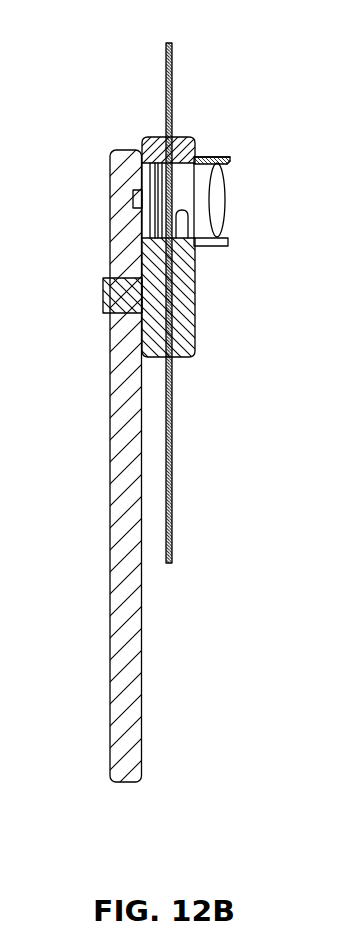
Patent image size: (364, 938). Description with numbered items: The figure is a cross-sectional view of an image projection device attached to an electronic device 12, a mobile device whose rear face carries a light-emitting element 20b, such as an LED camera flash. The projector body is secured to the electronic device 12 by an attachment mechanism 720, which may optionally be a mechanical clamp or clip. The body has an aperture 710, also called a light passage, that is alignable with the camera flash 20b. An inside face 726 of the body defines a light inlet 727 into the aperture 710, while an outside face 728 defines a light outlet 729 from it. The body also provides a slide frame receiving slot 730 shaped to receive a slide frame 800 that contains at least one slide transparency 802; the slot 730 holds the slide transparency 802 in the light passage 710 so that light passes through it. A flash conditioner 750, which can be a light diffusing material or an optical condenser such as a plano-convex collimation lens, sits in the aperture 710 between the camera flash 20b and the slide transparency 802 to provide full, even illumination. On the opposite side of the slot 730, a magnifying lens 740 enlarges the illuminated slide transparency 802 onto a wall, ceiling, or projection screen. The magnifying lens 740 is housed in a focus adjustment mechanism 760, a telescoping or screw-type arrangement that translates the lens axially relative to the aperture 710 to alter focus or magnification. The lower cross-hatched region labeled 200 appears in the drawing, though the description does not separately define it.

The electronic device 12 is at (106, 562).
The light-emitting element 20b is at (125, 200).
The mounting assembly body 200 is at (201, 340).
The aperture 710 is at (189, 181).
The attachment mechanism 720 is at (103, 312).
The inside face 726 is at (148, 245).
The light inlet 727 is at (151, 244).
The outside face 728 is at (231, 159).
The light outlet 729 is at (229, 165).
The slide frame receiving slot 730 is at (179, 130).
The magnifying lens 740 is at (233, 197).
The flash conditioner 750 is at (149, 183).
The focus adjustment mechanism 760 is at (227, 147).
The slide frame 800 is at (160, 287).
The slide transparency 802 is at (166, 88).